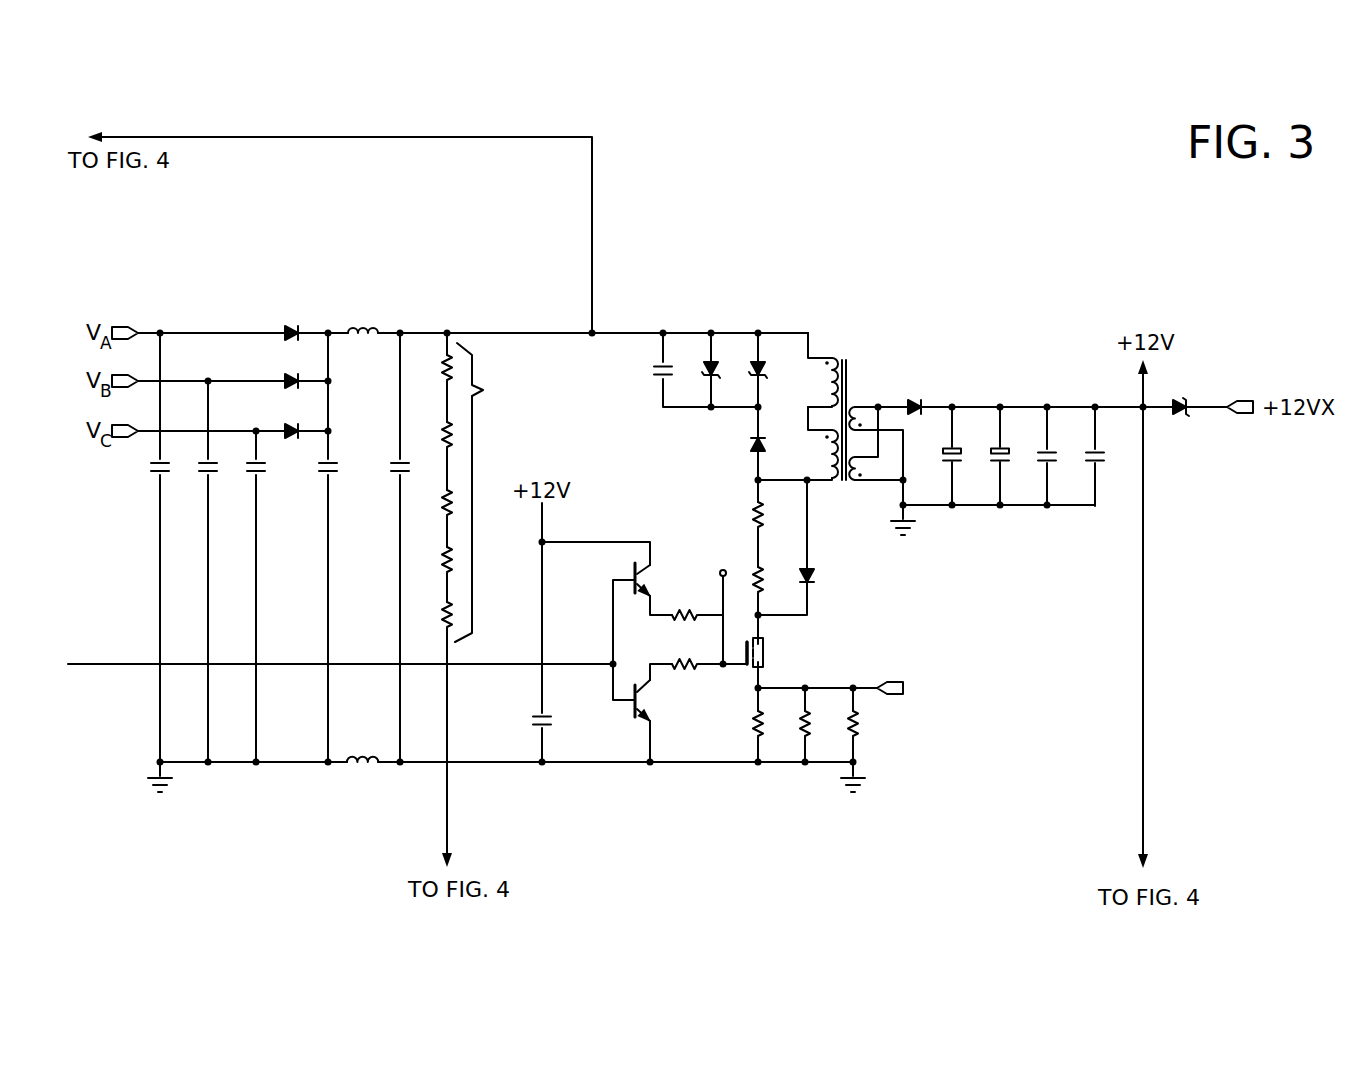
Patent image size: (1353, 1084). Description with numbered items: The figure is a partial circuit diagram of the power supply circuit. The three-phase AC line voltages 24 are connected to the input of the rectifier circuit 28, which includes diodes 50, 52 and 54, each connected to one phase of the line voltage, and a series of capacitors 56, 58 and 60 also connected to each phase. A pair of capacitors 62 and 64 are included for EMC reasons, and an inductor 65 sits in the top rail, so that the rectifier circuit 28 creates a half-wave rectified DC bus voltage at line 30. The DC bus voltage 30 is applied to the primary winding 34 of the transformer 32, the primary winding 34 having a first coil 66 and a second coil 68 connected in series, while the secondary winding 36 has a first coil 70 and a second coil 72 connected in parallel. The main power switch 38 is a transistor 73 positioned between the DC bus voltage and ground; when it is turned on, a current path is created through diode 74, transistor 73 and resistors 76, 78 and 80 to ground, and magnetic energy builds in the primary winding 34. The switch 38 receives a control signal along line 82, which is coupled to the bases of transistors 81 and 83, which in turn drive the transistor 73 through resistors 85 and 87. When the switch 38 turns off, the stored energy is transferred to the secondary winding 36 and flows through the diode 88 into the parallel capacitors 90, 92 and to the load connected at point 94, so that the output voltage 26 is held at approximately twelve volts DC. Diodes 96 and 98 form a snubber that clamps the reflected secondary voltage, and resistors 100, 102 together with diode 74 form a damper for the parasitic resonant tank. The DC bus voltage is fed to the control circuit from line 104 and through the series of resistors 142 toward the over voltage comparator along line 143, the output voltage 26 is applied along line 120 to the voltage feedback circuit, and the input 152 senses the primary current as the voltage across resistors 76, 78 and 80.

The three-phase AC line voltages 24 is at (150, 330).
The output voltage 26 is at (1138, 363).
The rectifier circuit 28 is at (246, 282).
The DC bus voltage line 30 is at (425, 332).
The transformer 32 is at (836, 364).
The primary winding 34 is at (798, 352).
The secondary winding 36 is at (882, 386).
The main power switch 38 is at (795, 656).
The diode 50 is at (292, 326).
The diode 52 is at (296, 377).
The diode 54 is at (296, 427).
The capacitor 56 is at (158, 476).
The capacitor 58 is at (206, 476).
The capacitor 60 is at (254, 476).
The capacitor 62 is at (326, 476).
The capacitor 64 is at (398, 476).
The inductor 65 is at (357, 328).
The first coil 66 is at (830, 387).
The second coil 68 is at (830, 463).
The first coil 70 is at (858, 412).
The second coil 72 is at (858, 472).
The transistor 73 is at (766, 650).
The diode 74 is at (812, 580).
The resistor 76 is at (754, 728).
The resistor 78 is at (803, 720).
The resistor 80 is at (858, 732).
The transistor 81 is at (635, 573).
The line 82 is at (513, 660).
The transistor 83 is at (636, 700).
The resistor 85 is at (685, 612).
The resistor 87 is at (697, 668).
The diode 88 is at (918, 396).
The capacitor 90 is at (955, 448).
The capacitor 92 is at (1003, 448).
The point 94 is at (1243, 415).
The diode 96 is at (753, 366).
The diode 98 is at (752, 440).
The resistor 100 is at (755, 515).
The resistor 102 is at (755, 585).
The line 104 is at (345, 136).
The line 120 is at (1143, 630).
The series of resistors 142 is at (489, 487).
The line to FIG. 4 143 is at (448, 803).
The input 152 is at (900, 680).